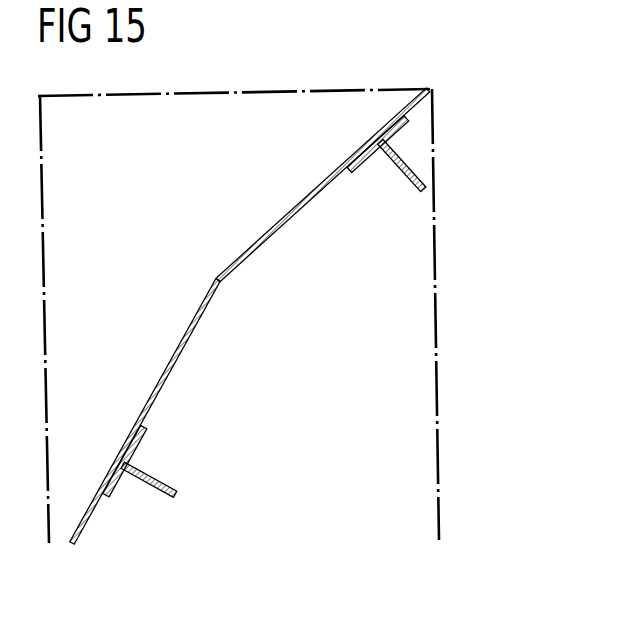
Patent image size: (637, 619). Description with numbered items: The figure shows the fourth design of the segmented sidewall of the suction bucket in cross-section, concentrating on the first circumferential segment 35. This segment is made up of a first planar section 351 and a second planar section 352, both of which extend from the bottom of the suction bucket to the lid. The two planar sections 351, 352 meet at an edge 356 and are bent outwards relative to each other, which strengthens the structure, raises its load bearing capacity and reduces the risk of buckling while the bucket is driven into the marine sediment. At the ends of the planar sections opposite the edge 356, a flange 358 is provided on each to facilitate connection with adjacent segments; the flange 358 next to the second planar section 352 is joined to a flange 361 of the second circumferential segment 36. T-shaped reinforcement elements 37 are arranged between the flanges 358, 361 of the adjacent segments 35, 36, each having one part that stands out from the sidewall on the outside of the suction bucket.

The first circumferential segment 35 is at (250, 316).
The first planar section 351 is at (182, 362).
The second planar section 352 is at (305, 213).
The edge 356 is at (216, 279).
The flange 358 is at (380, 170).
The reinforcement element 37 is at (418, 193).
The second circumferential segment 36 is at (441, 128).
The flange of the second circumferential segment 361 is at (402, 158).